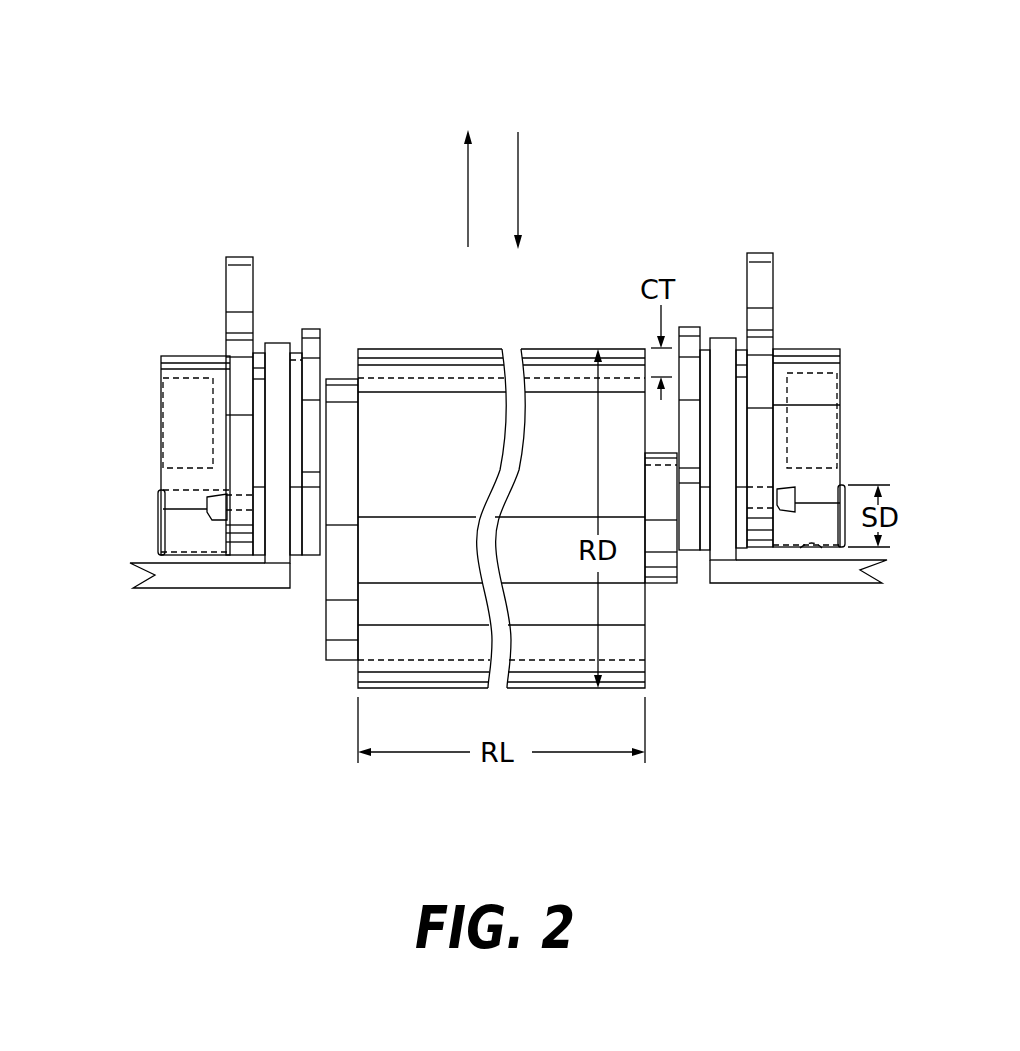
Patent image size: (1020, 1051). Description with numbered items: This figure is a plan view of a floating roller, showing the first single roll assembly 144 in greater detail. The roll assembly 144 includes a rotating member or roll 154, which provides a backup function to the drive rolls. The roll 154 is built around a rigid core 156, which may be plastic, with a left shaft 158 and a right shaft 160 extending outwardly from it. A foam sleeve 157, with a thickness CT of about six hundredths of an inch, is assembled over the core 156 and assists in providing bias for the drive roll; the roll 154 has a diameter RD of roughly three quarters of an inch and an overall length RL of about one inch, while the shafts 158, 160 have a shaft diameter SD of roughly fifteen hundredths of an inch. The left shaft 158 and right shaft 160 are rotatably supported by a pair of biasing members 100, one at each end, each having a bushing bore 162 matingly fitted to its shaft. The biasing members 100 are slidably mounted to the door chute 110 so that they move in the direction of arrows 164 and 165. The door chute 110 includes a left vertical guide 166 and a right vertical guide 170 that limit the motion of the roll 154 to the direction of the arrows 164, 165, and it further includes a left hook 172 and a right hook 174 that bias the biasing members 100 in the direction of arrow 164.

The biasing members 100 is at (164, 310).
The door chute 110 is at (182, 590).
The first single roll assembly 144 is at (578, 60).
The roll 154 is at (538, 293).
The rigid core 156 is at (342, 395).
The foam sleeve 157 is at (436, 395).
The left shaft 158 is at (160, 520).
The right shaft 160 is at (677, 553).
The bushing bore 162 is at (808, 545).
The arrow 164 is at (518, 178).
The arrow 165 is at (468, 178).
The left vertical guide 166 is at (278, 343).
The right vertical guide 170 is at (718, 338).
The left hook 172 is at (207, 503).
The right hook 174 is at (795, 495).